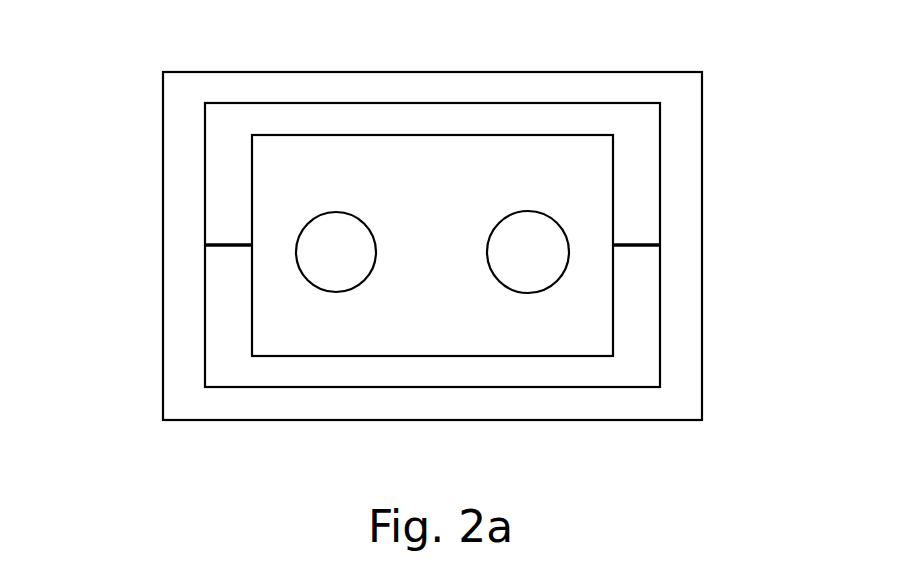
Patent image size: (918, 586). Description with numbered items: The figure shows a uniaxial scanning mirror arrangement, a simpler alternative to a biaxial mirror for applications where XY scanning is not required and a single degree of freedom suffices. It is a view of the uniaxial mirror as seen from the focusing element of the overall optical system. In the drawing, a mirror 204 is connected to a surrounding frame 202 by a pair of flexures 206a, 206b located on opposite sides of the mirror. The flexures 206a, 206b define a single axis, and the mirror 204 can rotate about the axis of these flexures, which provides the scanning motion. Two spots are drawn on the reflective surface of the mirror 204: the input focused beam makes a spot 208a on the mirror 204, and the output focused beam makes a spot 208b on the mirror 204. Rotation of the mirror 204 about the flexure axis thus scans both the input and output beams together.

The frame 202 is at (180, 142).
The mirror 204 is at (582, 185).
The flexure 206a is at (222, 248).
The flexure 206b is at (633, 250).
The spot 208a is at (322, 252).
The spot 208b is at (518, 242).